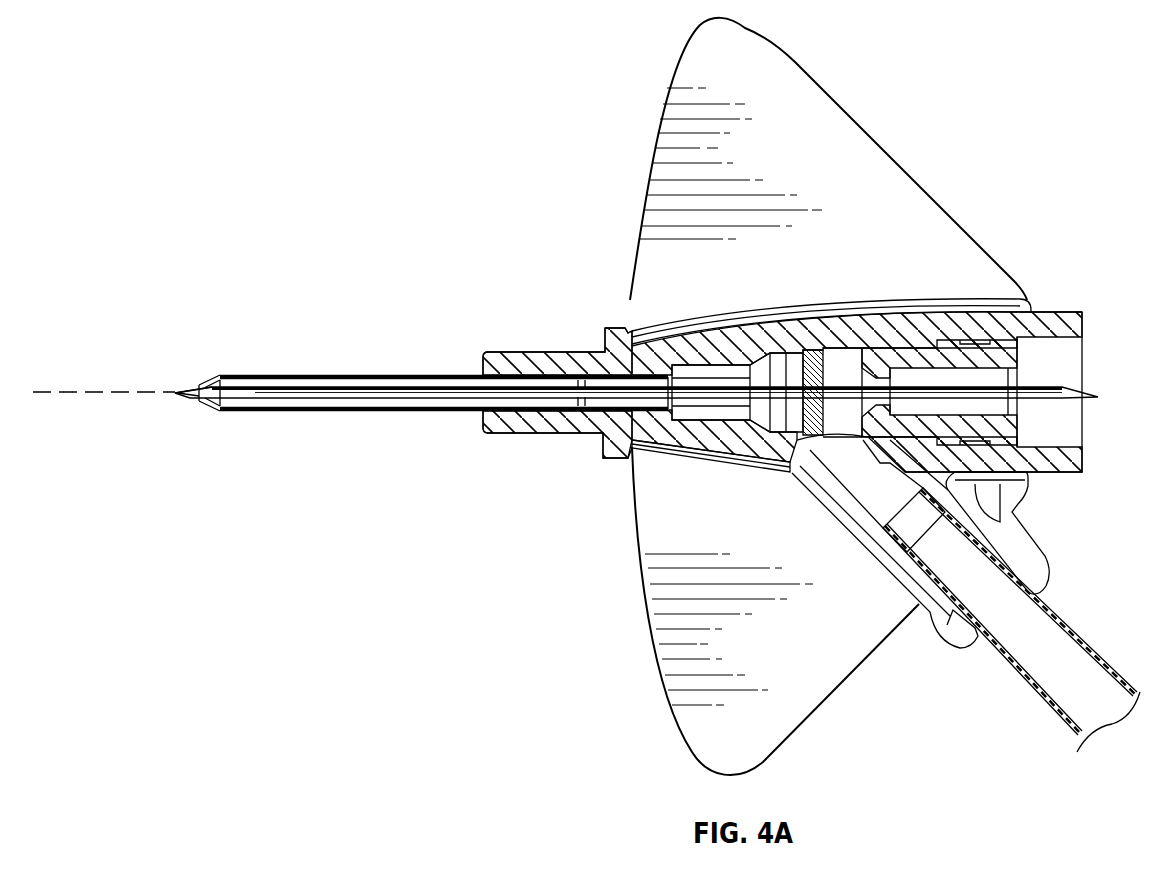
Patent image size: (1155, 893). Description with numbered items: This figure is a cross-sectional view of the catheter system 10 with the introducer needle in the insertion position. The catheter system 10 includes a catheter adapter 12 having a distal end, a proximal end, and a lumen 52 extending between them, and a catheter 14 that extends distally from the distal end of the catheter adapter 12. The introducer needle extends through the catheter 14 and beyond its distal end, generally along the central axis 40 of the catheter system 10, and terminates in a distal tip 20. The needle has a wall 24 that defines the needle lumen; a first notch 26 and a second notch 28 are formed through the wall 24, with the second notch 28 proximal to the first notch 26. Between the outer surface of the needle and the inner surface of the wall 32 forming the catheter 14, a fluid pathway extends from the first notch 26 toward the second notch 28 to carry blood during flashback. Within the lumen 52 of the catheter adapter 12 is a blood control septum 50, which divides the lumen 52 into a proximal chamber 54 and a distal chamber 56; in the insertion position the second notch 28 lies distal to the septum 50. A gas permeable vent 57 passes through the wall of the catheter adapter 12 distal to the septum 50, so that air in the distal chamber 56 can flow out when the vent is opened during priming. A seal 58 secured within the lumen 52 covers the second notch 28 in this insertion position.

The catheter system 10 is at (404, 105).
The catheter adapter 12 is at (699, 349).
The catheter 14 is at (352, 364).
The distal tip 20 is at (185, 390).
The wall 24 is at (313, 398).
The first notch 26 is at (259, 387).
The second notch 28 is at (812, 389).
The wall 32 is at (399, 375).
The central axis 40 is at (78, 392).
The blood control septum 50 is at (897, 360).
The lumen 52 is at (848, 355).
The proximal chamber 54 is at (987, 400).
The distal chamber 56 is at (843, 428).
The gas permeable vent 57 is at (833, 477).
The seal 58 is at (790, 346).